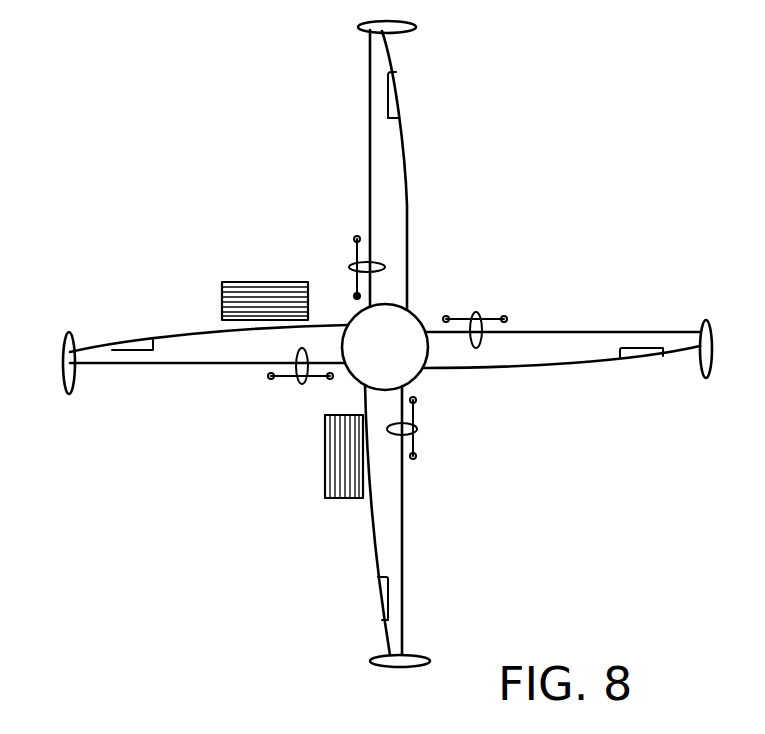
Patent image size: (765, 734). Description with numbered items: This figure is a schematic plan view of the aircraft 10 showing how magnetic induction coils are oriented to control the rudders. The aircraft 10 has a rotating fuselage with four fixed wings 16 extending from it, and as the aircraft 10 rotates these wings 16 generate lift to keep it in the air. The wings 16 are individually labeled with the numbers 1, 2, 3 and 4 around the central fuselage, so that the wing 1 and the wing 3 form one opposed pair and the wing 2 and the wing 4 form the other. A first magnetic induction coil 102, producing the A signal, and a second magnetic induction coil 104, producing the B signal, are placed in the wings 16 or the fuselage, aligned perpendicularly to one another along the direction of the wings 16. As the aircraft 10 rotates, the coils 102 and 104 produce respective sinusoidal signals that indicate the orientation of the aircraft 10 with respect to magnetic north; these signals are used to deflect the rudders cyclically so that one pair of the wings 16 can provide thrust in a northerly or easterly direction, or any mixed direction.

The aircraft 10 is at (263, 116).
The wings 16 is at (387, 344).
The first wing 1 is at (567, 349).
The second wing 2 is at (387, 165).
The third wing 3 is at (205, 359).
The fourth wing 4 is at (397, 526).
The magnetic induction coil 102 is at (222, 302).
The magnetic induction coil 104 is at (338, 500).